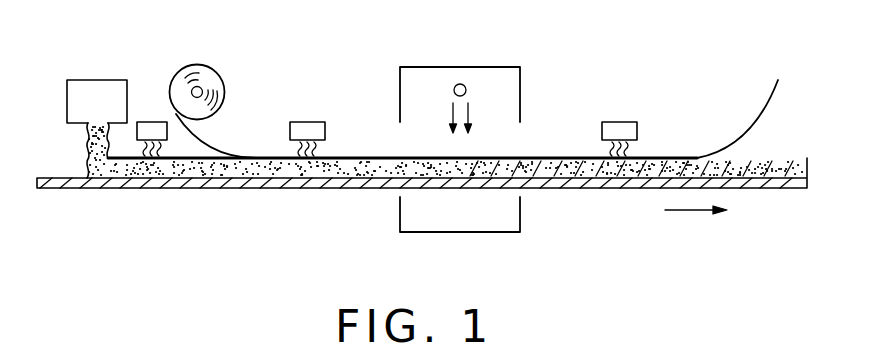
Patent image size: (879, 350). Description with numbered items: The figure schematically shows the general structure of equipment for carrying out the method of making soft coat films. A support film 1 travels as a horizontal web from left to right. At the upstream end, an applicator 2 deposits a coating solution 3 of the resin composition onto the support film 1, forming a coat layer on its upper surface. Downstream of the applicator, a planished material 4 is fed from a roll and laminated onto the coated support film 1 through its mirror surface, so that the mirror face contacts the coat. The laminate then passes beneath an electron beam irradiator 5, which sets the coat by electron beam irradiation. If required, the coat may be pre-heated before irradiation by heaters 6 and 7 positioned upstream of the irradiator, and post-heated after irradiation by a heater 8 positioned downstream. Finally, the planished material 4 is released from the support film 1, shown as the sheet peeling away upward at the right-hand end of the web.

The support film 1 is at (56, 190).
The applicator 2 is at (92, 93).
The coating solution 3 is at (140, 172).
The planished material 4 is at (197, 68).
The electron beam irradiator 5 is at (457, 66).
The heater 6 is at (155, 120).
The heater 7 is at (306, 121).
The heater 8 is at (617, 121).